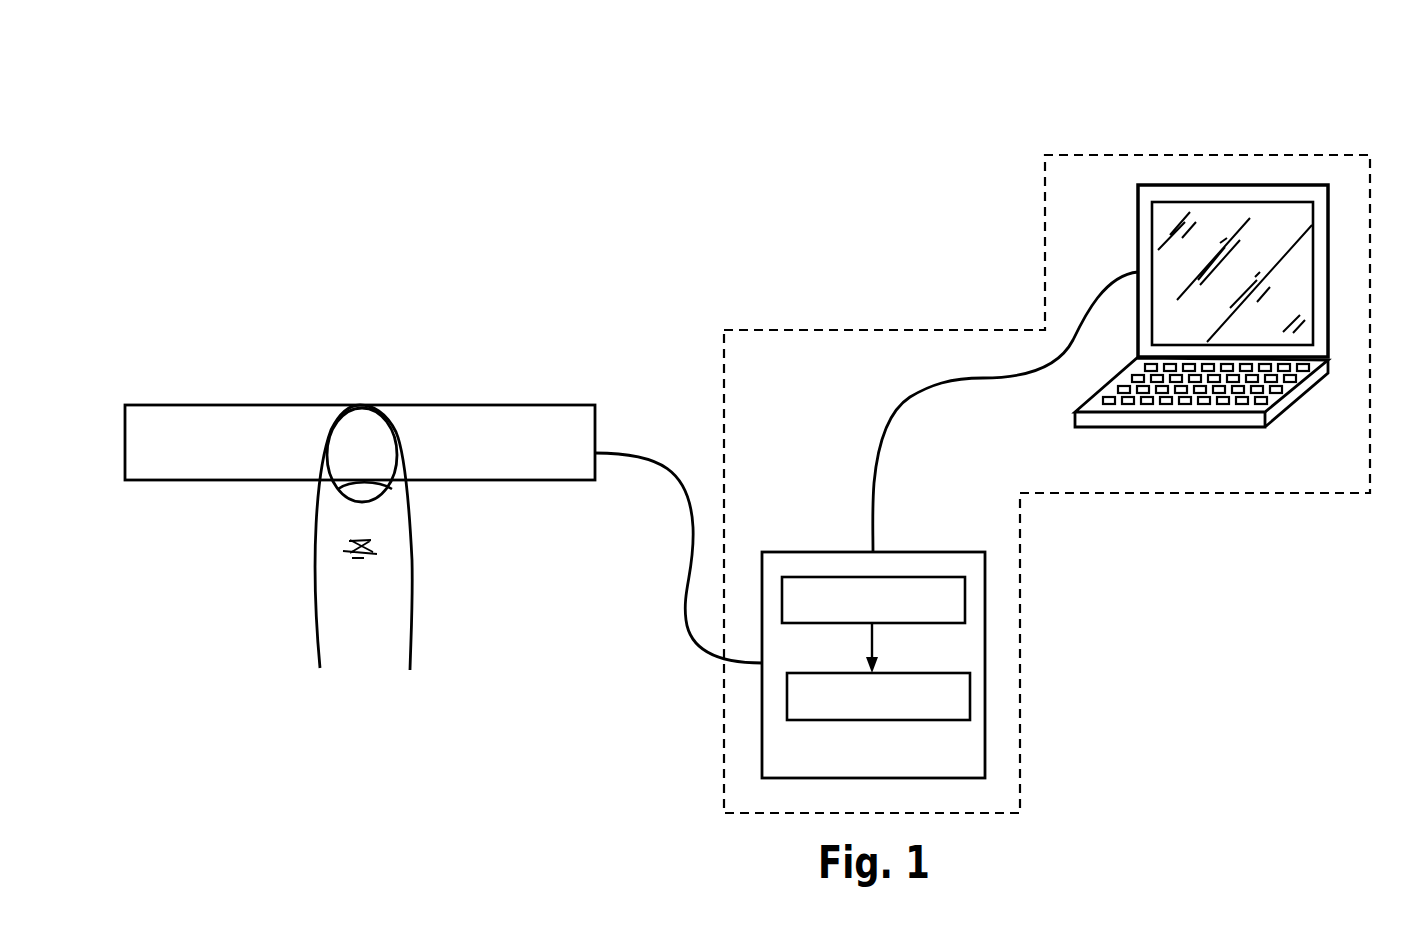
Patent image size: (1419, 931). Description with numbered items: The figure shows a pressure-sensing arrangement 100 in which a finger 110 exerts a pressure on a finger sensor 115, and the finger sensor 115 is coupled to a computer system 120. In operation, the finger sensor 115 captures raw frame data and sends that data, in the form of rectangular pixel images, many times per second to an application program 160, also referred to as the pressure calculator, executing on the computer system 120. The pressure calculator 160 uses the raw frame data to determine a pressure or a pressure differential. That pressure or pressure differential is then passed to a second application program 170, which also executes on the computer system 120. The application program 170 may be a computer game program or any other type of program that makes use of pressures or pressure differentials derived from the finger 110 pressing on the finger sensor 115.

The fingerprint sensing system 100 is at (838, 108).
The finger 110 is at (412, 565).
The finger sensor 115 is at (595, 423).
The computer system 120 is at (1225, 493).
The application program (pressure calculator) 160 is at (893, 616).
The application program 170 is at (897, 713).